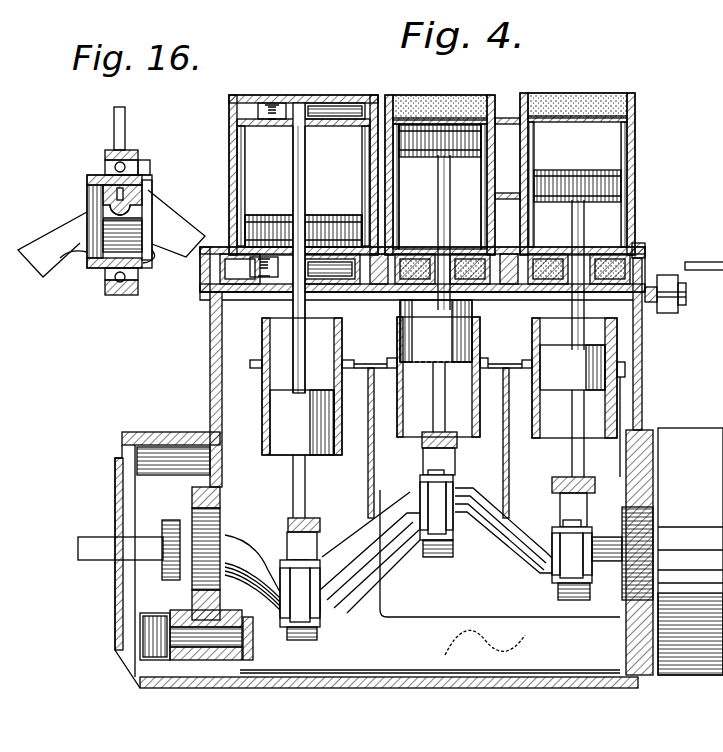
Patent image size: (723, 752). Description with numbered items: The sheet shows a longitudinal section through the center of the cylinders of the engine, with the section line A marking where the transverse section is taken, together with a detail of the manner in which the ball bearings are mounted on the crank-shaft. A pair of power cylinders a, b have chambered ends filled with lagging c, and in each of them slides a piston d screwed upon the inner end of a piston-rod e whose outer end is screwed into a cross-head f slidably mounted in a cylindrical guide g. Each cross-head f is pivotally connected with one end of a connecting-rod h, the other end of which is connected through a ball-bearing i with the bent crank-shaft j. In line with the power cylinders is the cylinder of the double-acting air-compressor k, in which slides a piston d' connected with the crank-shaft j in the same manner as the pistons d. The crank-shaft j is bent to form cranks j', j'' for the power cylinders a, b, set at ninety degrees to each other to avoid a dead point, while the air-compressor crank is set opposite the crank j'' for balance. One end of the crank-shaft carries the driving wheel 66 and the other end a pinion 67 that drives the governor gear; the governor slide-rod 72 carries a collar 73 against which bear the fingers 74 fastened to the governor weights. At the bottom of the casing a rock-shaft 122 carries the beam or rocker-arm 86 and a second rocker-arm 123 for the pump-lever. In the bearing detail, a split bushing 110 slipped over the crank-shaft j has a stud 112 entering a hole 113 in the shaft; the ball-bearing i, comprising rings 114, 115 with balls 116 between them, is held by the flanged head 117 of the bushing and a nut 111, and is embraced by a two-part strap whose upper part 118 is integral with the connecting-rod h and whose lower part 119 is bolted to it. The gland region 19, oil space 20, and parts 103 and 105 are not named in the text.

In FIG. 4, the power cylinder a is at (637, 150).
In FIG. 4, the power cylinder b is at (440, 186).
In FIG. 4, the lagging c is at (618, 100).
In FIG. 4, the piston d is at (510, 137).
In FIG. 4, the piston of air-compressor d' is at (303, 222).
In FIG. 16, the piston-rod e is at (290, 312).
In FIG. 4, the piston-rod e is at (444, 226).
In FIG. 4, the cross-head f is at (498, 340).
In FIG. 4, the cylindrical guide g is at (268, 395).
In FIG. 16, the connecting-rod h is at (126, 115).
In FIG. 4, the connecting-rod h is at (588, 462).
In FIG. 16, the ball-bearing i is at (147, 165).
In FIG. 16, the crank-shaft j is at (111, 227).
In FIG. 4, the crank-shaft j is at (521, 501).
In FIG. 4, the crank of power cylinder a j' is at (407, 549).
In FIG. 4, the crank of power cylinder b j'' is at (316, 572).
In FIG. 4, the air-compressor k is at (307, 142).
In FIG. 4, the section line A— A is at (578, 130).
In FIG. 4, the gland 19 is at (355, 282).
In FIG. 4, the oil chamber 20 is at (335, 108).
In FIG. 4, the driving wheel 66 is at (690, 551).
In FIG. 4, the pinion 67 is at (170, 520).
In FIG. 4, the slide-rod 72 is at (700, 262).
In FIG. 4, the collar 73 is at (706, 217).
In FIG. 4, the fingers 74 is at (680, 298).
In FIG. 4, the beam or rocker-arm 86 is at (250, 662).
In FIG. 16, the bearing block 103 is at (142, 264).
In FIG. 4, the pin 105 is at (436, 508).
In FIG. 16, the split bushing 110 is at (92, 236).
In FIG. 16, the nut 111 is at (100, 270).
In FIG. 4, the nut 111 is at (288, 620).
In FIG. 16, the stud 112 is at (108, 186).
In FIG. 16, the hole 113 is at (115, 193).
In FIG. 16, the ring 114 is at (140, 158).
In FIG. 16, the ring 115 is at (145, 160).
In FIG. 16, the balls 116 is at (104, 168).
In FIG. 16, the flanged head 117 is at (150, 178).
In FIG. 4, the flanged head 117 is at (322, 608).
In FIG. 16, the upper strap part 118 is at (104, 153).
In FIG. 4, the upper strap part 118 is at (285, 540).
In FIG. 16, the lower strap part 119 is at (142, 298).
In FIG. 4, the lower strap part 119 is at (448, 562).
In FIG. 4, the rock-shaft 122 is at (215, 640).
In FIG. 4, the rocker-arm 123 is at (145, 660).